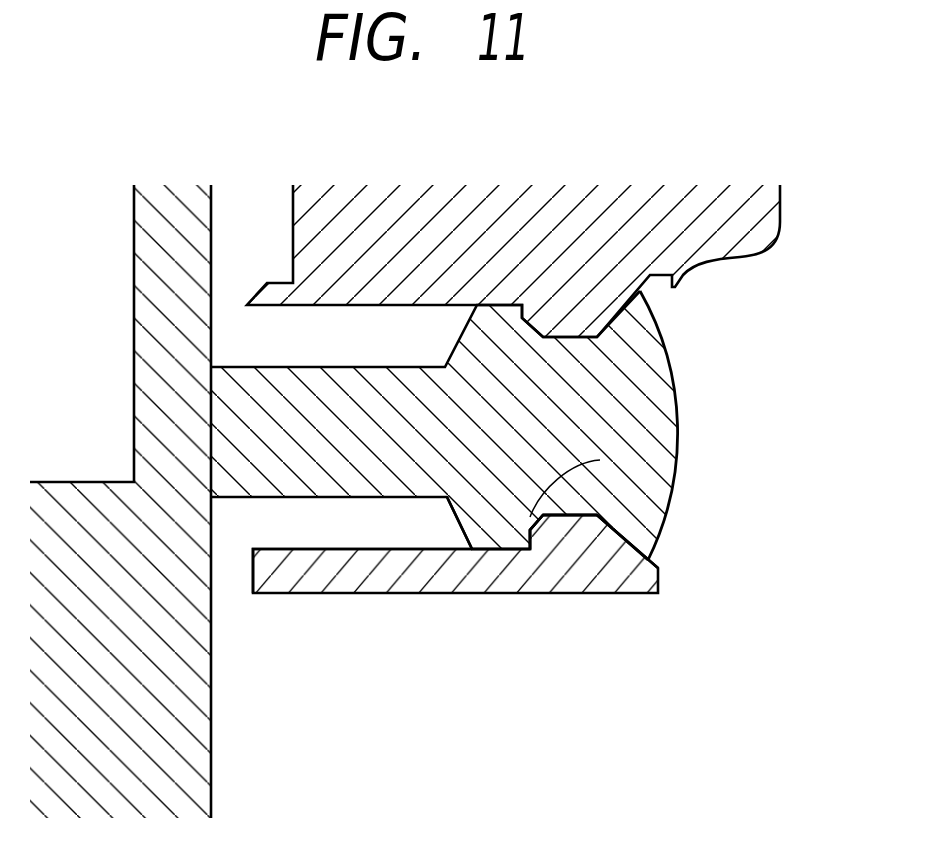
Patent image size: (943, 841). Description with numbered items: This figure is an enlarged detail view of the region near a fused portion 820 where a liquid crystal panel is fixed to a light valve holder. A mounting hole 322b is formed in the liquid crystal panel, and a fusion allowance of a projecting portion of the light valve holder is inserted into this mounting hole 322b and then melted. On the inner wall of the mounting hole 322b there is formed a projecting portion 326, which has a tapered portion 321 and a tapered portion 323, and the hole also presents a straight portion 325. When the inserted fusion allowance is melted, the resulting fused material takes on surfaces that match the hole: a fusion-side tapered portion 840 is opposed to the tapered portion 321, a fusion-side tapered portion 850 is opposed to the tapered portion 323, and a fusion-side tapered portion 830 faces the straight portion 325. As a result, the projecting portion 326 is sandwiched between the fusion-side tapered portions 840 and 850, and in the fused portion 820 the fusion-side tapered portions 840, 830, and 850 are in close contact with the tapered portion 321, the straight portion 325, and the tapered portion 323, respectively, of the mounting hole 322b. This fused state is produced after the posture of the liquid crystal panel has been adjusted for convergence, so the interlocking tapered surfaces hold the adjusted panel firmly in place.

The fused portion 820 is at (650, 347).
The fusion-side tapered portion 850 is at (600, 460).
The fusion-side tapered portion 840 is at (630, 530).
The straight portion 325 is at (335, 556).
The mounting hole 322b is at (410, 512).
The fusion-side tapered portion 830 is at (489, 547).
The tapered portion 323 is at (542, 523).
The projecting portion 326 is at (575, 520).
The tapered portion 321 is at (630, 557).